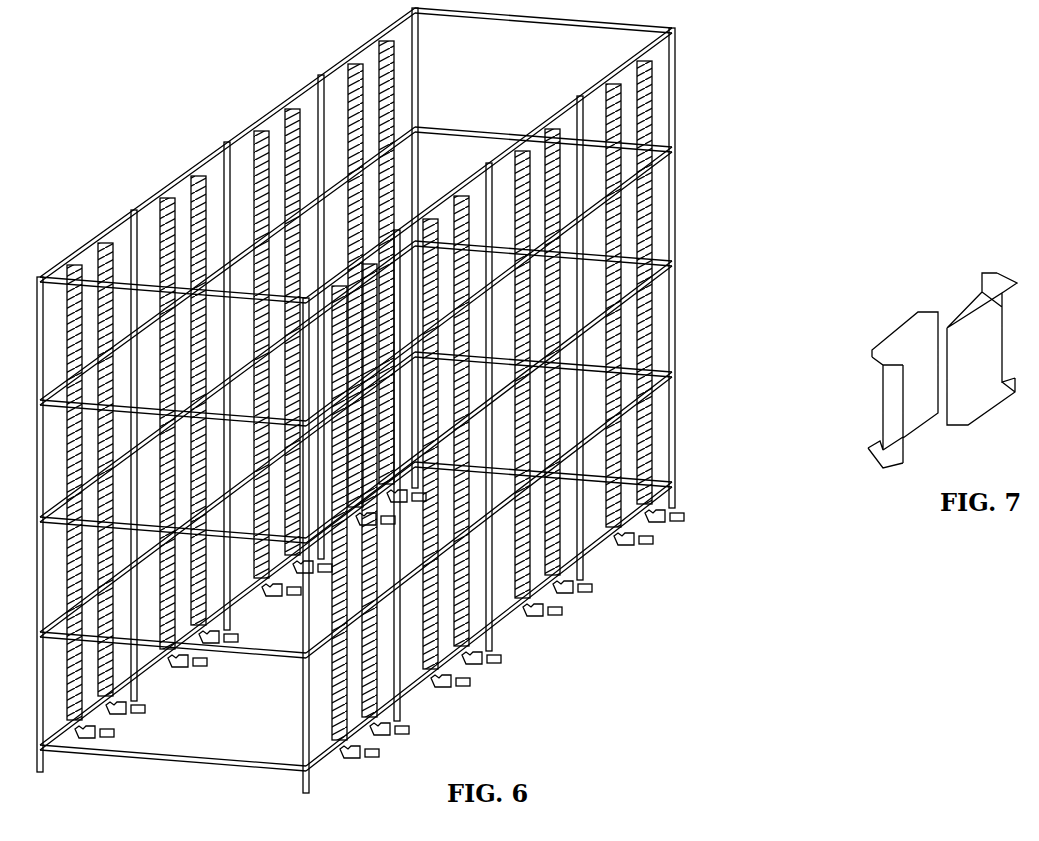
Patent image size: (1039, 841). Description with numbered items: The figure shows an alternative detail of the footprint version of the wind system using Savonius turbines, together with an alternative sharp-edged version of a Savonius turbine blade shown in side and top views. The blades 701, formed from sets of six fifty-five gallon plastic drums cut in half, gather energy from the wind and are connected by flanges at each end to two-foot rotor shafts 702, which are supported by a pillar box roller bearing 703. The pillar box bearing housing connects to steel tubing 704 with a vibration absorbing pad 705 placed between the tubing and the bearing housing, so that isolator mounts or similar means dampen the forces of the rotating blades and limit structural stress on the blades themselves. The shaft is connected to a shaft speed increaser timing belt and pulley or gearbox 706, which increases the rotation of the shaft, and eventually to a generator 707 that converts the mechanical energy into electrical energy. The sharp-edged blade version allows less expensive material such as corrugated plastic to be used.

The blades 701 is at (254, 140).
The rotor shafts 702 is at (195, 168).
The pillar box roller bearing 703 is at (682, 128).
The steel tubing 704 is at (684, 366).
The vibration absorbing pad 705 is at (681, 203).
The shaft speed increaser timing belt and pulley or gearbox 706 is at (541, 622).
The generator 707 is at (561, 622).